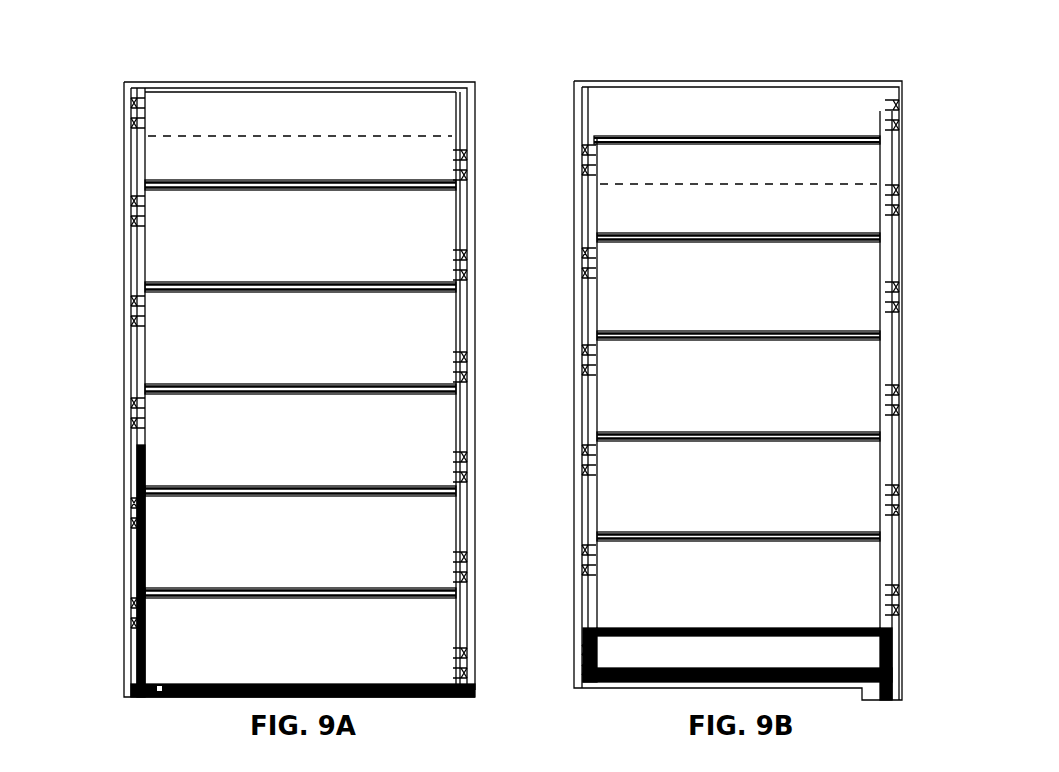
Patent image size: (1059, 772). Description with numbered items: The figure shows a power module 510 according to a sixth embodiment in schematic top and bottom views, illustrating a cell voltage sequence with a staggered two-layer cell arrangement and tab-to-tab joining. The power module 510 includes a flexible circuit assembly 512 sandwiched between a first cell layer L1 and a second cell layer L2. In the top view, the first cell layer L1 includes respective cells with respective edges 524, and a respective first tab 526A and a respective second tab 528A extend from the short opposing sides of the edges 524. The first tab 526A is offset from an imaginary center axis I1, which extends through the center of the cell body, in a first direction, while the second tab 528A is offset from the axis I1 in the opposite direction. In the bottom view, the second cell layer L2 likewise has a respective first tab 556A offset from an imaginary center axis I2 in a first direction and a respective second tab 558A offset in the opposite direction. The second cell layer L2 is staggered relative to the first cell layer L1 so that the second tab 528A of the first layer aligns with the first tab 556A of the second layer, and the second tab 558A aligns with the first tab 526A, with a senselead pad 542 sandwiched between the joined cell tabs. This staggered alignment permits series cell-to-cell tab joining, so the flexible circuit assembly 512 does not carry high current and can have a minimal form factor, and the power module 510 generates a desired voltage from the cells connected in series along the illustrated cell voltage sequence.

In FIG. 9A, the power module 510 is at (308, 350).
In FIG. 9B, the power module 510 is at (749, 367).
In FIG. 9A, the flexible circuit assembly 512 is at (130, 30).
In FIG. 9B, the flexible circuit assembly 512 is at (880, 66).
In FIG. 9A, the edges 524 is at (142, 268).
In FIG. 9A, the first tab 526A is at (139, 100).
In FIG. 9A, the second tab 528A is at (461, 152).
In FIG. 9A, the senselead pad 542 is at (132, 106).
In FIG. 9B, the senselead pad 542 is at (897, 397).
In FIG. 9B, the first tab 556A is at (587, 150).
In FIG. 9B, the second tab 558A is at (890, 198).
In FIG. 9A, the first cell layer L1 is at (107, 350).
In FIG. 9B, the second cell layer L2 is at (923, 331).
In FIG. 9A, the imaginary center axis I1 is at (259, 132).
In FIG. 9B, the imaginary center axis I2 is at (736, 181).